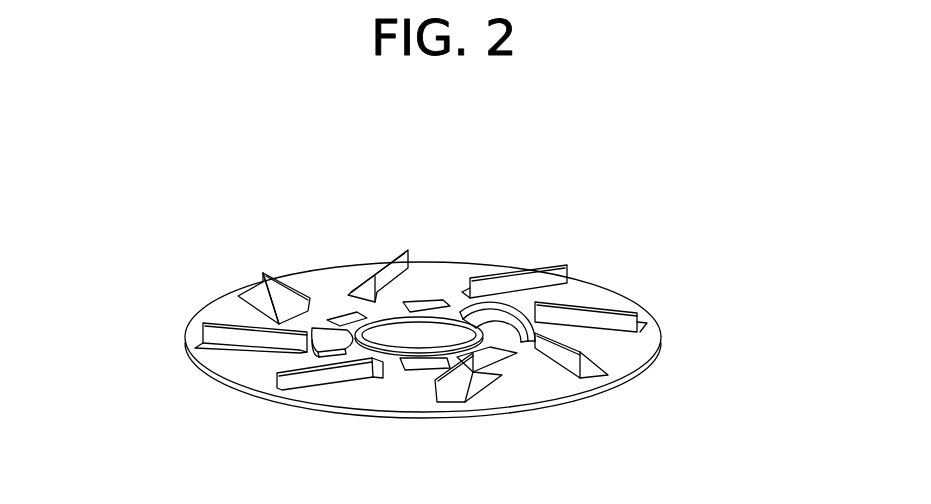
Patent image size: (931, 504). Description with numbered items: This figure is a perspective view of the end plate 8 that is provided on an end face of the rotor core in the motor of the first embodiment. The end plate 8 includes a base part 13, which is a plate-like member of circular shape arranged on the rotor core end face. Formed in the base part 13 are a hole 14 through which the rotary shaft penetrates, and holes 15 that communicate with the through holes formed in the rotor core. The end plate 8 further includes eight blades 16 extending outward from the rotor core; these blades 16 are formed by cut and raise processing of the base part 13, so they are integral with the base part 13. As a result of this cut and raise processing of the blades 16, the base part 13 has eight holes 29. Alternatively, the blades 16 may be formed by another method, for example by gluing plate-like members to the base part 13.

The end plate 8 is at (612, 188).
The base part 13 is at (190, 360).
The hole 14 is at (423, 335).
The holes 15 is at (353, 320).
The blades 16 is at (568, 268).
The holes 29 is at (473, 385).